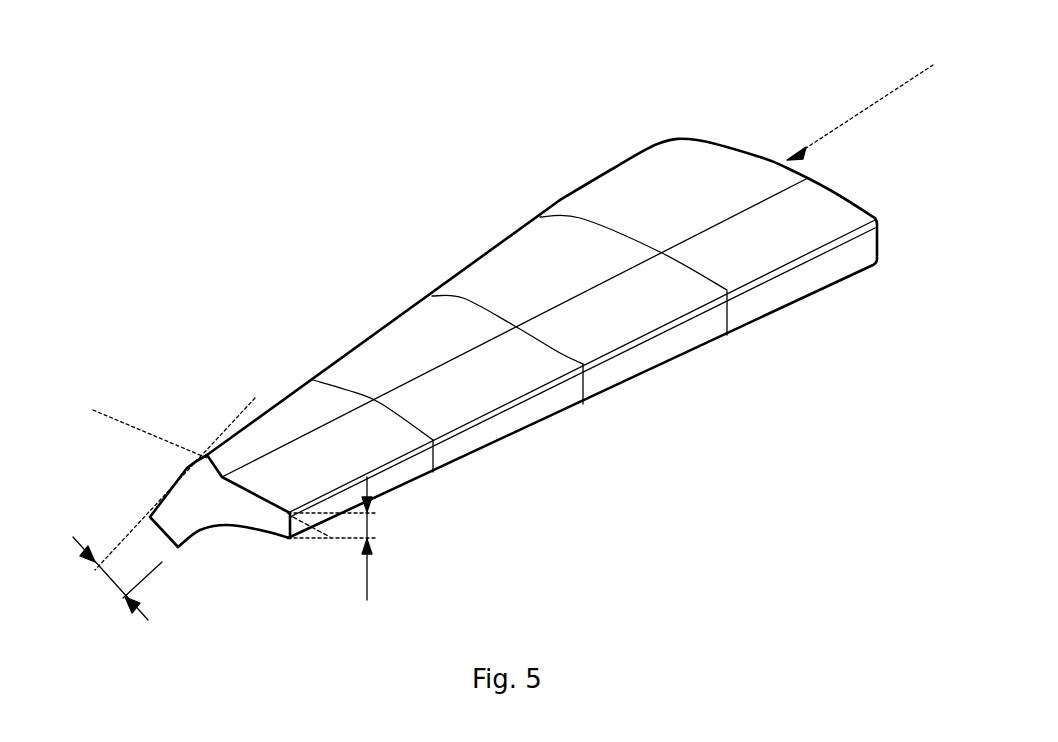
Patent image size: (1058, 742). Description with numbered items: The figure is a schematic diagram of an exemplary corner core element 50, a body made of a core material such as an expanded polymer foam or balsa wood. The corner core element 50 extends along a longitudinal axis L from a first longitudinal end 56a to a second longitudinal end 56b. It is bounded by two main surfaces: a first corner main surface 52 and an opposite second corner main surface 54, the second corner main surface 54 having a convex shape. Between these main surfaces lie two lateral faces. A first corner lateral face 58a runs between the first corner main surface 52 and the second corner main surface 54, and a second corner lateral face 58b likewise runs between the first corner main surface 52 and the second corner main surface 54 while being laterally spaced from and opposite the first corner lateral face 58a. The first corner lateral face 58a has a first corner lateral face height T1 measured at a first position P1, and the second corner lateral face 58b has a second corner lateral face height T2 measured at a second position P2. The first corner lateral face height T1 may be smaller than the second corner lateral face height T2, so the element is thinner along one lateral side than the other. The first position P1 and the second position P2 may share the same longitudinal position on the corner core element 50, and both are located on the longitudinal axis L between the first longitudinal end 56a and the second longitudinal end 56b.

The corner core element 50 is at (398, 208).
The first corner main surface 52 is at (234, 536).
The second corner main surface 54 is at (667, 173).
The first longitudinal end 56a is at (773, 163).
The second longitudinal end 56b is at (213, 493).
The first corner lateral face 58a is at (493, 433).
The second corner lateral face 58b is at (162, 537).
The longitudinal axis L is at (850, 120).
The first position P1 is at (136, 423).
The second position P2 is at (181, 469).
The first corner lateral face height T1 is at (348, 538).
The second corner lateral face height T2 is at (117, 578).